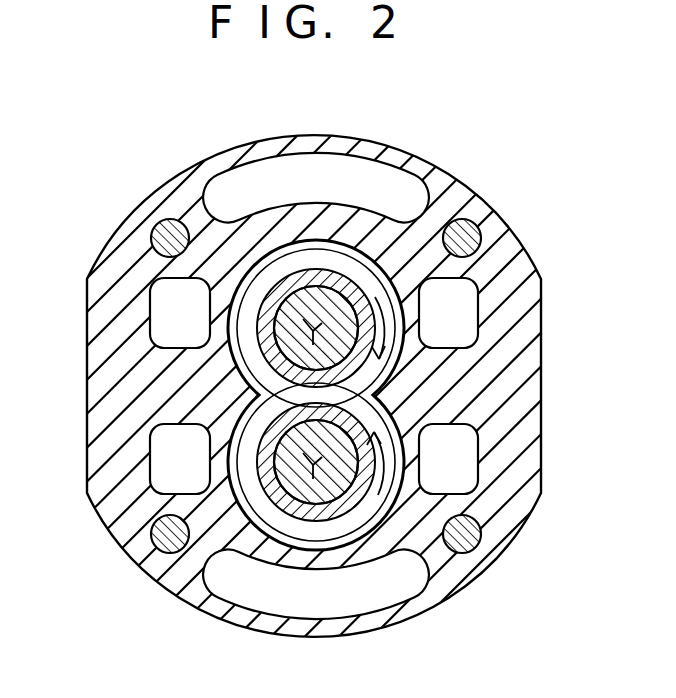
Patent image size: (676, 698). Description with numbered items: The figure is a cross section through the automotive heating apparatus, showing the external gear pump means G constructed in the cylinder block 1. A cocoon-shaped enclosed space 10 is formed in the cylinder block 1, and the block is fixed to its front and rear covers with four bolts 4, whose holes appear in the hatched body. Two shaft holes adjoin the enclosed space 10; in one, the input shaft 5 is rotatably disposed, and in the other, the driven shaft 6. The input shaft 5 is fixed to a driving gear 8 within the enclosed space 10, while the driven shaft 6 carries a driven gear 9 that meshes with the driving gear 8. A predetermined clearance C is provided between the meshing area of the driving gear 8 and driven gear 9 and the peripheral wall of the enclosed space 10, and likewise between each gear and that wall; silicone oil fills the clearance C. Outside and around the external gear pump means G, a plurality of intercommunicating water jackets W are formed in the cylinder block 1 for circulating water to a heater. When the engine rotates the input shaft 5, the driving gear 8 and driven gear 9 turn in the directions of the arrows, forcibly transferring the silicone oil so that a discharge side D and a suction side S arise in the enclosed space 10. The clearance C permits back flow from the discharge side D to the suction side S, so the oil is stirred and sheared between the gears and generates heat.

The cylinder block 1 is at (118, 207).
The bolts 4 is at (171, 226).
The input shaft 5 is at (283, 493).
The driven shaft 6 is at (330, 307).
The driving gear 8 is at (347, 503).
The driven gear 9 is at (278, 288).
The enclosed space 10 is at (245, 362).
The water jackets W is at (462, 476).
The suction side S is at (262, 404).
The discharge side D is at (373, 397).
The external gear pump means G is at (252, 365).
The clearance C is at (259, 492).